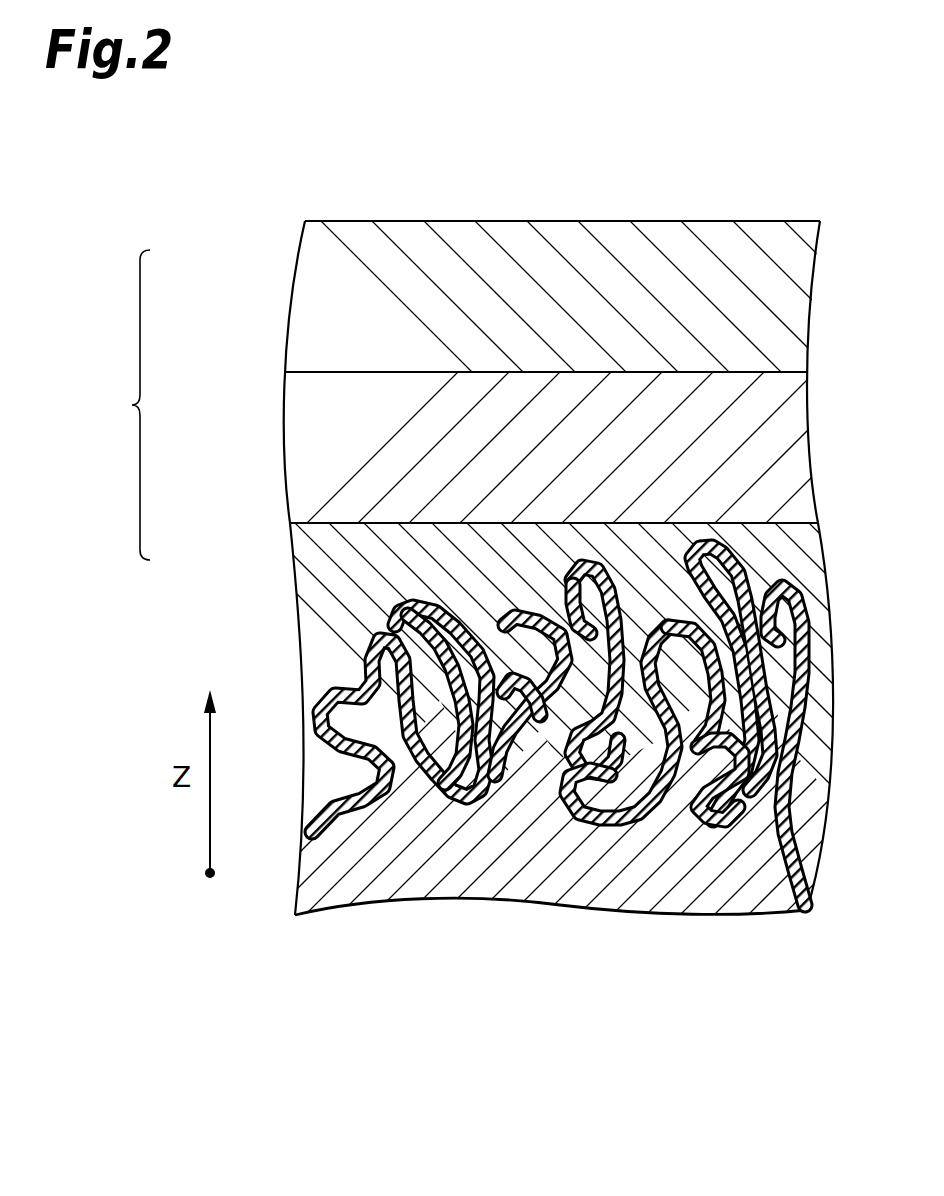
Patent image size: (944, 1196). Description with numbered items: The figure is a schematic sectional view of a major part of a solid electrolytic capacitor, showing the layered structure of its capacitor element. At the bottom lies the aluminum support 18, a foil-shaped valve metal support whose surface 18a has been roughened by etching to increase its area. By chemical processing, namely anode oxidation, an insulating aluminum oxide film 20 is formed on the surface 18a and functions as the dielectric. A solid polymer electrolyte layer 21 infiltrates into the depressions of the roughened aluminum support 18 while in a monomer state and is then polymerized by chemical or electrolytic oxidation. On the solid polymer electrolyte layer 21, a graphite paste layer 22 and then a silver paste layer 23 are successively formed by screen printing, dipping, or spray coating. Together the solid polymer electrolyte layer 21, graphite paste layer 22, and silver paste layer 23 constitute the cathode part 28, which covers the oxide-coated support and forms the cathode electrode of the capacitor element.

The cathode part 28 is at (123, 405).
The silver paste layer 23 is at (315, 313).
The graphite paste layer 22 is at (303, 458).
The solid polymer electrolyte layer 21 is at (485, 748).
The aluminum support 18 is at (425, 830).
The surface 18a is at (575, 815).
The aluminum oxide film 20 is at (717, 827).